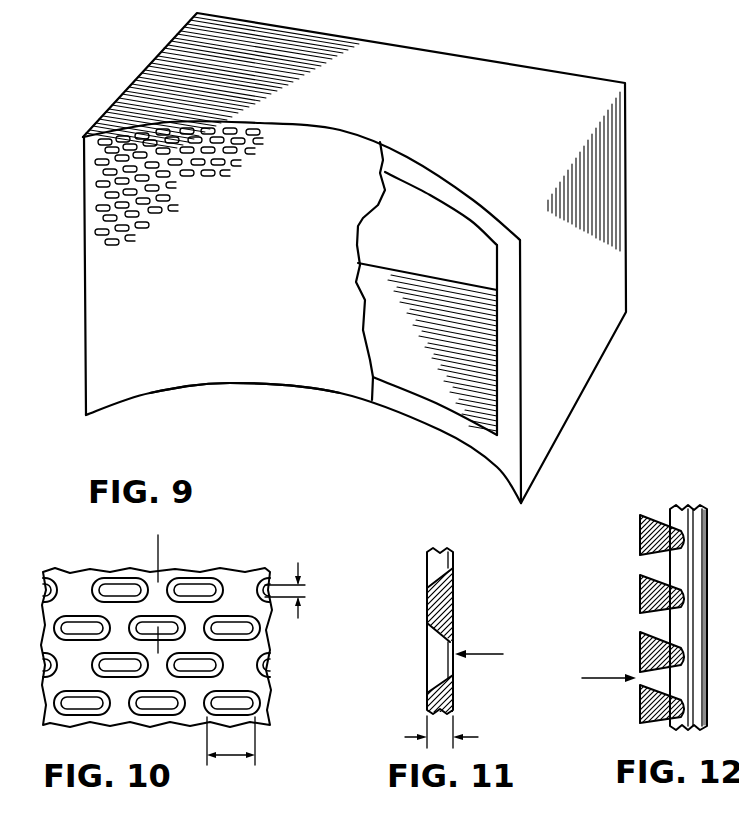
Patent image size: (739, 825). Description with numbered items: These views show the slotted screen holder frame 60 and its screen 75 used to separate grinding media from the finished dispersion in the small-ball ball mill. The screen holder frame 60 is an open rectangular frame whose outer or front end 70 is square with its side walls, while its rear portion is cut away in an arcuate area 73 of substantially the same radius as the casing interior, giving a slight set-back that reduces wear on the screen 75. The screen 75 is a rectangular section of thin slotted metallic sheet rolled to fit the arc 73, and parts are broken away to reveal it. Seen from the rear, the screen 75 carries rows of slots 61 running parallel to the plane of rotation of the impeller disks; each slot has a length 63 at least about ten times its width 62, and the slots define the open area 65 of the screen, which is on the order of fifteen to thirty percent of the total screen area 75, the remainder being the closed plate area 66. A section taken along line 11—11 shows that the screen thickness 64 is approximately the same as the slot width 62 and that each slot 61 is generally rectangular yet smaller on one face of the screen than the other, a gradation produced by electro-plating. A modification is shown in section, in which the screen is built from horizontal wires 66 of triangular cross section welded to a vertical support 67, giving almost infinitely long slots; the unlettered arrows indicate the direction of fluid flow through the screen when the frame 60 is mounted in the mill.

In FIG. 9, the screen holder frame 60 is at (512, 88).
In FIG. 9, the front end 70 is at (437, 52).
In FIG. 9, the arcuate area 73 is at (430, 178).
In FIG. 9, the screen 75 is at (322, 373).
In FIG. 10, the slots 61 is at (192, 586).
In FIG. 11, the slots 61 is at (418, 658).
In FIG. 10, the slot width 62 is at (300, 590).
In FIG. 10, the slot length 63 is at (231, 741).
In FIG. 11, the screen thickness 64 is at (441, 732).
In FIG. 10, the open area 65 is at (235, 627).
In FIG. 10, the closed plate area 66 is at (217, 682).
In FIG. 12, the closed plate area 66 is at (640, 533).
In FIG. 12, the vertical support 67 is at (671, 513).
In FIG. 10, the section line 11— 11 is at (150, 541).